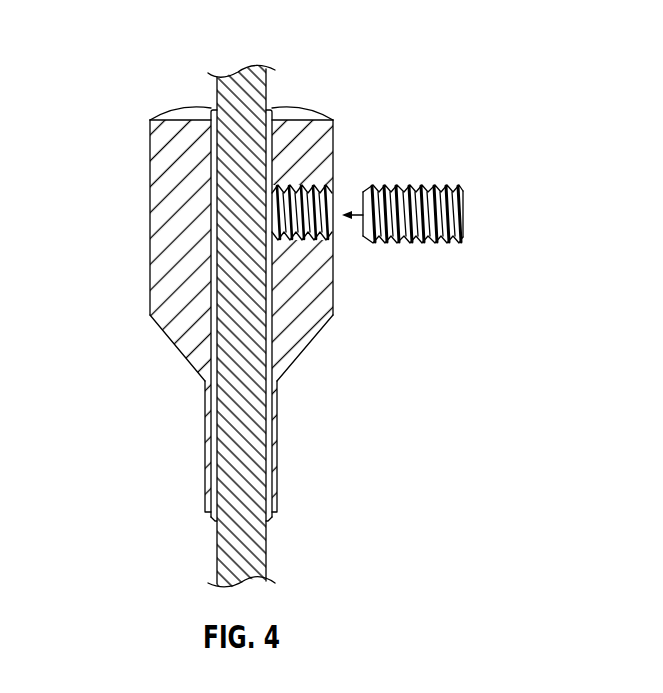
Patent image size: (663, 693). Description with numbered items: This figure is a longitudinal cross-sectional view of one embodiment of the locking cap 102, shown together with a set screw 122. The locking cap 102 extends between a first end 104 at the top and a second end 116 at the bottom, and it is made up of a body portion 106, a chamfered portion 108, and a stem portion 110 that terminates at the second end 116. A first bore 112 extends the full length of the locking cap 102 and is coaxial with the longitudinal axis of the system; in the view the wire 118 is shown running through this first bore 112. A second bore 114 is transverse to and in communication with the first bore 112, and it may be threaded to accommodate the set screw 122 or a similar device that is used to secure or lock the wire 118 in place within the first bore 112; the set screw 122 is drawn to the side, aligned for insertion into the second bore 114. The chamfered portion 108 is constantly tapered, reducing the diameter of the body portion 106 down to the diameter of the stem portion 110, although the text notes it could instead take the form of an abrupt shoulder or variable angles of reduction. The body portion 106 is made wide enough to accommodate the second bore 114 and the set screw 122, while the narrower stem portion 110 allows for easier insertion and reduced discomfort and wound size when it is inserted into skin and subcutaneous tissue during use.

The locking cap 102 is at (389, 94).
The first end 104 is at (305, 116).
The body portion 106 is at (173, 193).
The chamfered portion 108 is at (196, 320).
The stem portion 110 is at (205, 435).
The first bore 112 is at (217, 263).
The second bore 114 is at (313, 238).
The second end 116 is at (215, 514).
The wire 118 is at (237, 550).
The set screw 122 is at (435, 187).